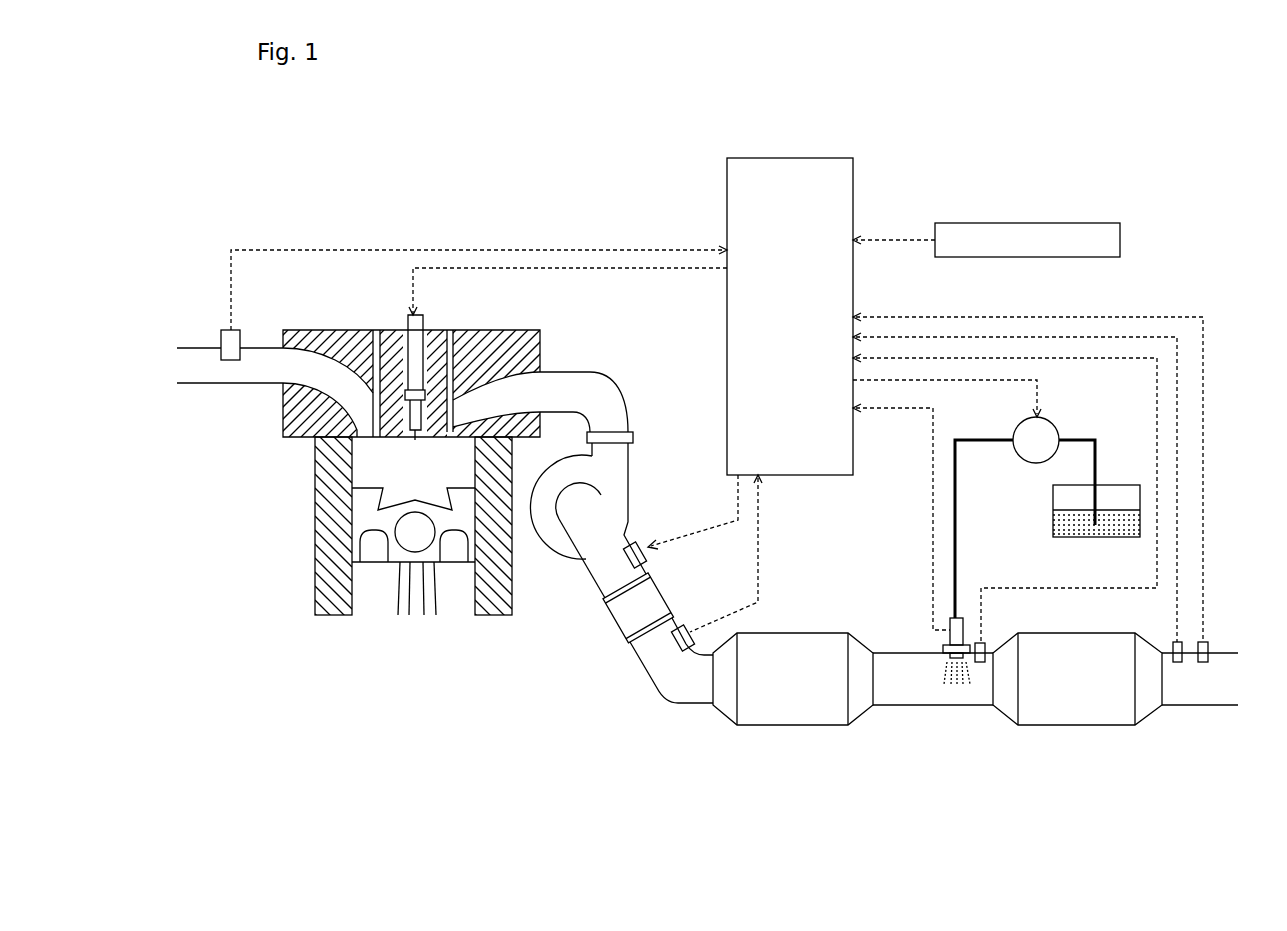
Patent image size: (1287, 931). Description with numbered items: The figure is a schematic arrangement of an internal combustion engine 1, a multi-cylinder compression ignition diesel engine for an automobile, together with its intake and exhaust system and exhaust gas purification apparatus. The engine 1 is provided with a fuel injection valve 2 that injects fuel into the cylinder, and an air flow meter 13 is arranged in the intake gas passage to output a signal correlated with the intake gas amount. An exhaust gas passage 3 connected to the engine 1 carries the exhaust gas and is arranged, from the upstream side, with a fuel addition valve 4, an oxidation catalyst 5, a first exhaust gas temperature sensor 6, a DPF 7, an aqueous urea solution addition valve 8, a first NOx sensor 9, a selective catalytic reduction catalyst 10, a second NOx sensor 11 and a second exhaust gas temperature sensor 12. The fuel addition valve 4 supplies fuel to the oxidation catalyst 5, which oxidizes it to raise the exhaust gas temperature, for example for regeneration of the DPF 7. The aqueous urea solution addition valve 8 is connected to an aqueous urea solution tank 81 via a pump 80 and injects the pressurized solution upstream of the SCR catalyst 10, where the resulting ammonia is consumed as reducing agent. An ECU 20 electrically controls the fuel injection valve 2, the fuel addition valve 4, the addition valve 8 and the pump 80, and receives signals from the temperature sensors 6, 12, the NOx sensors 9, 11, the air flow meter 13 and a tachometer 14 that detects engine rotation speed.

The internal combustion engine 1 is at (309, 537).
The fuel injection valve 2 is at (424, 318).
The exhaust gas passage 3 is at (651, 703).
The fuel addition valve 4 is at (645, 560).
The oxidation catalyst 5 is at (612, 618).
The first exhaust gas temperature sensor 6 is at (683, 628).
The DPF 7 is at (808, 725).
The aqueous urea solution addition valve 8 is at (960, 615).
The first NOx sensor 9 is at (990, 645).
The selective catalytic reduction catalyst 10 is at (1090, 725).
The second NOx sensor 11 is at (1172, 645).
The second exhaust gas temperature sensor 12 is at (1204, 644).
The air flow meter 13 is at (228, 330).
The tachometer 14 is at (1120, 240).
The ECU 20 is at (852, 158).
The pump 80 is at (1053, 425).
The aqueous urea solution tank 81 is at (1110, 485).